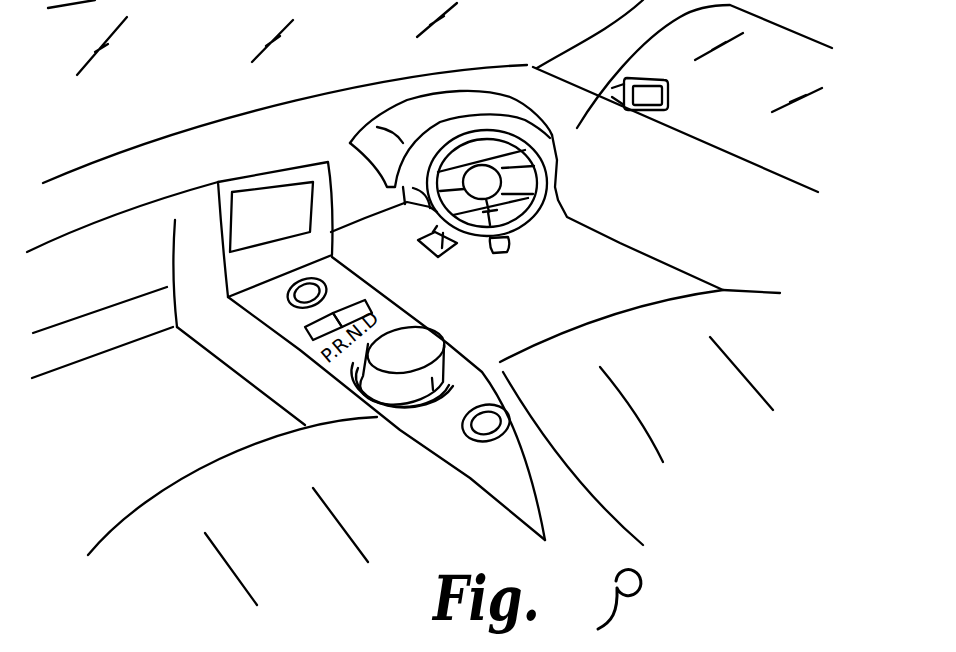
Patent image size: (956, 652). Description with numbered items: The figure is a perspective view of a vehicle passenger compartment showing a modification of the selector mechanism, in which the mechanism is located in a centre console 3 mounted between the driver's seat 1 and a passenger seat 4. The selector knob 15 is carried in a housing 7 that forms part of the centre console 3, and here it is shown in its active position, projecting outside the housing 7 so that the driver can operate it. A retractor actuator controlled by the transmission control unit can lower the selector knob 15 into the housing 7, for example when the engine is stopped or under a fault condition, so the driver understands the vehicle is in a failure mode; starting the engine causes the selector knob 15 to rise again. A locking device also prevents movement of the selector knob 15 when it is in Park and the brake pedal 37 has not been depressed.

The driver's seat 1 is at (622, 333).
The centre console 3 is at (213, 353).
The passenger seat 4 is at (138, 528).
The housing 7 is at (357, 382).
The selector knob 15 is at (418, 337).
The brake pedal 37 is at (435, 246).